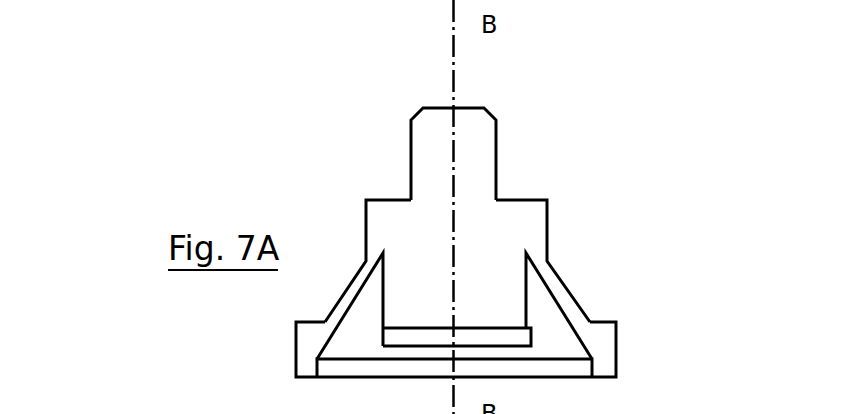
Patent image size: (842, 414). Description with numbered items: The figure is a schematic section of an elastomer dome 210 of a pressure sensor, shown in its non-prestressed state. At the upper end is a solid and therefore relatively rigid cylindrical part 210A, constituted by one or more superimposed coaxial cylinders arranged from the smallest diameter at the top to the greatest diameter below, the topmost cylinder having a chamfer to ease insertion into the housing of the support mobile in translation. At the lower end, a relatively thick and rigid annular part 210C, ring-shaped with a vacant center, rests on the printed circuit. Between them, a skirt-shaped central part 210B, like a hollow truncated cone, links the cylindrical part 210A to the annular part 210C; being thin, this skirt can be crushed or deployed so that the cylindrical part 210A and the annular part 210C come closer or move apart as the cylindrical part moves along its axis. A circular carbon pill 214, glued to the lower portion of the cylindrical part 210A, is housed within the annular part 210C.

The elastomer dome 210 is at (328, 147).
The cylindrical part 210A is at (448, 287).
The central part 210B is at (552, 282).
The annular part 210C is at (607, 356).
The carbon pill 214 is at (495, 330).